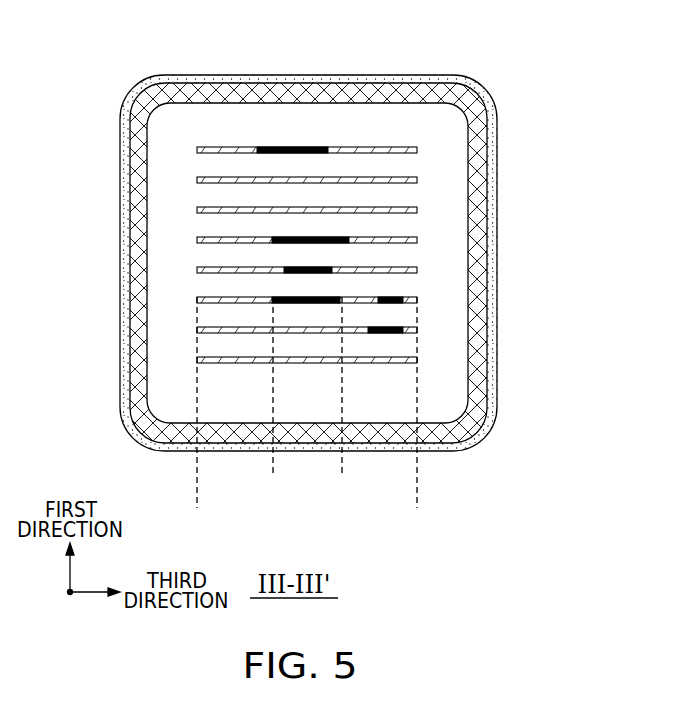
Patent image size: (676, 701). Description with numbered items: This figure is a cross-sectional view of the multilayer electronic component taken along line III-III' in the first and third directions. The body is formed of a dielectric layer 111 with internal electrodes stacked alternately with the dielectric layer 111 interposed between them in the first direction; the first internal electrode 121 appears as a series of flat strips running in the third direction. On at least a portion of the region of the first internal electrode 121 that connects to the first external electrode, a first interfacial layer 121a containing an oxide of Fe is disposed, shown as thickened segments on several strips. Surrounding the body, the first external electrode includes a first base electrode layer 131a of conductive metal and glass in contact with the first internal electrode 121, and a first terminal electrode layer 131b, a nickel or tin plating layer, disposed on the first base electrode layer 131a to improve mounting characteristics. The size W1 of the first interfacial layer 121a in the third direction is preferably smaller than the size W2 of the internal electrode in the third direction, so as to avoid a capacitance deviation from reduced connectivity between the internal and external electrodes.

The dielectric layer 111 is at (235, 160).
The first internal electrode 121 is at (372, 147).
The first interfacial layer 121a is at (291, 147).
The first base electrode layer 131a is at (483, 219).
The first terminal electrode layer 131b is at (490, 248).
The size of the interfacial layer in the third direction W1 is at (341, 473).
The size of the internal electrode in the third direction W2 is at (198, 507).